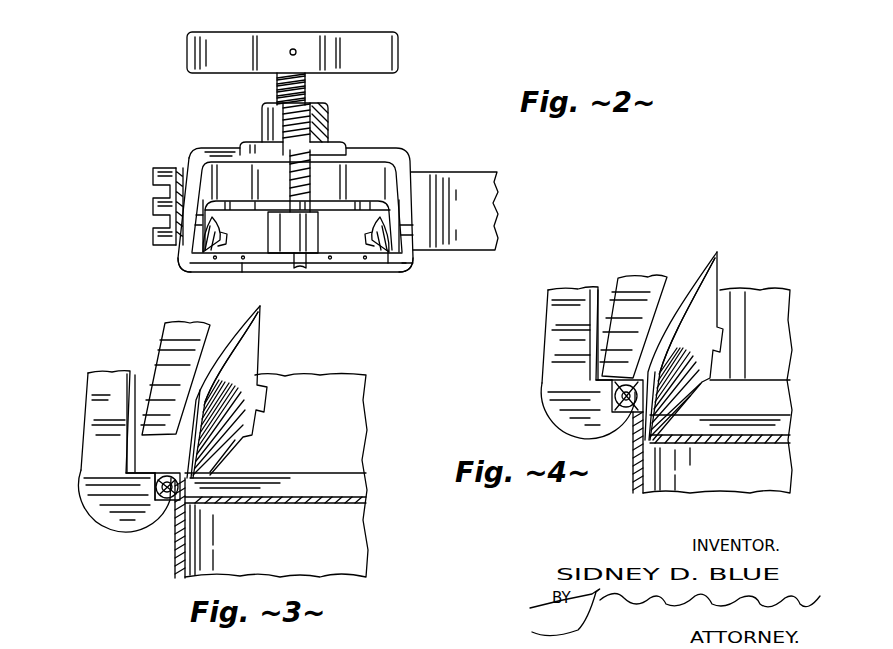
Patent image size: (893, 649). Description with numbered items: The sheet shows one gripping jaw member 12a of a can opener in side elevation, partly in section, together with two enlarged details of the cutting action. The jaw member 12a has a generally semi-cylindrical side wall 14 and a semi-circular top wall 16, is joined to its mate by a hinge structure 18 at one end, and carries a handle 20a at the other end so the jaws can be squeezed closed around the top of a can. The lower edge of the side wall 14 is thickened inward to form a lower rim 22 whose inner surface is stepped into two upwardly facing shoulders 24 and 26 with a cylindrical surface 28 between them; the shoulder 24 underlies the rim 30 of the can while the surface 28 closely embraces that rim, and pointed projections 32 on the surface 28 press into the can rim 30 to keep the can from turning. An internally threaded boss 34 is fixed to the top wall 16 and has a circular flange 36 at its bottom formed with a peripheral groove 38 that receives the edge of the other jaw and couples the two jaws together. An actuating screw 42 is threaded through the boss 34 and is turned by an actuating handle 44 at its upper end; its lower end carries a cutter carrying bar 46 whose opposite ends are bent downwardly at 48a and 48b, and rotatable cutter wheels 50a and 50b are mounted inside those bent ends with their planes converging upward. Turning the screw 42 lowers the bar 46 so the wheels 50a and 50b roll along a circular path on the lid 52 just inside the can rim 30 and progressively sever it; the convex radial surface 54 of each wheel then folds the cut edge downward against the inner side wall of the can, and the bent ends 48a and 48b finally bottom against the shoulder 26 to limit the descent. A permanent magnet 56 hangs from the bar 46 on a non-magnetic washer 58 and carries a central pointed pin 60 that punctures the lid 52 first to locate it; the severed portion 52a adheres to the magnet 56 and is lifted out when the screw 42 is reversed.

In FIG. 2, the gripping jaw member 12a is at (414, 154).
In FIG. 2, the side wall 14 is at (181, 242).
In FIG. 3, the side wall 14 is at (95, 400).
In FIG. 4, the side wall 14 is at (548, 315).
In FIG. 2, the top wall 16 is at (204, 150).
In FIG. 2, the hinge structure 18 is at (153, 178).
In FIG. 2, the handle 20a is at (475, 180).
In FIG. 2, the lower rim 22 is at (181, 268).
In FIG. 3, the lower rim 22 is at (120, 527).
In FIG. 4, the lower rim 22 is at (580, 420).
In FIG. 2, the shoulder 24 is at (390, 263).
In FIG. 3, the shoulder 24 is at (172, 505).
In FIG. 4, the shoulder 24 is at (638, 452).
In FIG. 2, the shoulder 26 is at (411, 260).
In FIG. 3, the shoulder 26 is at (160, 478).
In FIG. 4, the shoulder 26 is at (570, 358).
In FIG. 2, the cylindrical surface 28 is at (262, 264).
In FIG. 3, the cylindrical surface 28 is at (157, 470).
In FIG. 4, the cylindrical surface 28 is at (612, 382).
In FIG. 3, the rim 30 is at (178, 468).
In FIG. 2, the projections 32 is at (242, 263).
In FIG. 3, the projections 32 is at (160, 483).
In FIG. 2, the boss 34 is at (330, 115).
In FIG. 2, the flange 36 is at (344, 146).
In FIG. 2, the peripheral groove 38 is at (254, 145).
In FIG. 2, the actuating screw 42 is at (306, 85).
In FIG. 2, the actuating handle 44 is at (366, 37).
In FIG. 2, the cutter carrying bar 46 is at (330, 201).
In FIG. 2, the downwardly bent end 48a is at (195, 217).
In FIG. 3, the downwardly bent end 48a is at (170, 345).
In FIG. 4, the downwardly bent end 48a is at (622, 280).
In FIG. 2, the downwardly bent end 48b is at (402, 230).
In FIG. 2, the cutter wheel 50a is at (215, 234).
In FIG. 3, the cutter wheel 50a is at (255, 360).
In FIG. 4, the cutter wheel 50a is at (718, 282).
In FIG. 2, the cutter wheel 50b is at (370, 226).
In FIG. 3, the lid 52 is at (350, 493).
In FIG. 4, the severed portion 52a is at (705, 448).
In FIG. 3, the radial surface 54 is at (235, 340).
In FIG. 4, the radial surface 54 is at (690, 285).
In FIG. 2, the permanent magnet 56 is at (320, 232).
In FIG. 2, the non-magnetic washer 58 is at (283, 210).
In FIG. 2, the pointed pin 60 is at (300, 268).